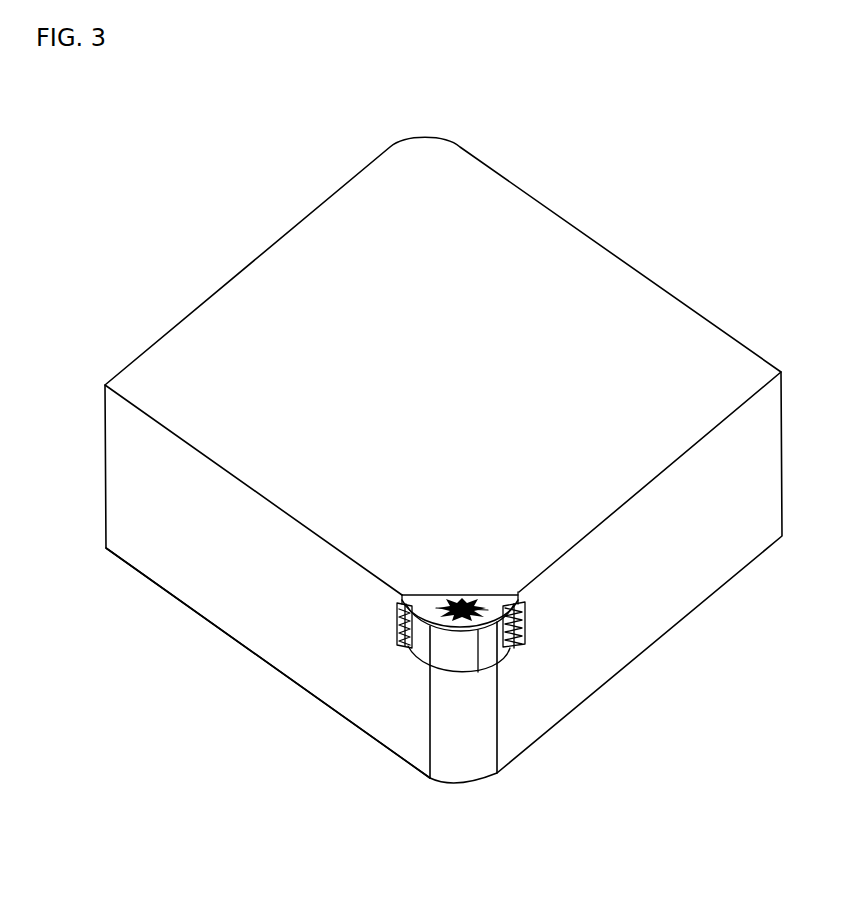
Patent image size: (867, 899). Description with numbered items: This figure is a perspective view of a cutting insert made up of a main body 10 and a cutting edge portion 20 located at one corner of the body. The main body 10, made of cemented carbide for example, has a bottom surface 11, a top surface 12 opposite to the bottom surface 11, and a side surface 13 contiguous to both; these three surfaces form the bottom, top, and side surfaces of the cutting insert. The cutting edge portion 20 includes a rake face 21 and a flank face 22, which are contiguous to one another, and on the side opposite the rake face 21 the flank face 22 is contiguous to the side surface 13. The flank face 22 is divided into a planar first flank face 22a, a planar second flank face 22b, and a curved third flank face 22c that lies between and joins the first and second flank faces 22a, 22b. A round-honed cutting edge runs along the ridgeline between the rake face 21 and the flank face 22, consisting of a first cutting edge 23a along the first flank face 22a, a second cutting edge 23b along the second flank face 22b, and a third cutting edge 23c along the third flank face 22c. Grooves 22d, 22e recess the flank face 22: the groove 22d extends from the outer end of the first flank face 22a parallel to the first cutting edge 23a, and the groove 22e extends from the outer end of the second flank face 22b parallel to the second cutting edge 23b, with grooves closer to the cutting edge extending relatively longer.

The main body 10 is at (443, 466).
The bottom surface 11 is at (197, 613).
The top surface 12 is at (231, 300).
The side surface 13 is at (162, 532).
The cutting edge portion 20 is at (465, 496).
The rake face 21 is at (475, 587).
The flank face 22 is at (531, 744).
The first flank face 22a is at (417, 650).
The second flank face 22b is at (510, 653).
The third flank face 22c is at (465, 672).
The groove 22d is at (417, 632).
The groove 22e is at (525, 615).
The first cutting edge 23a is at (397, 607).
The second cutting edge 23b is at (520, 598).
The third cutting edge 23c is at (479, 673).